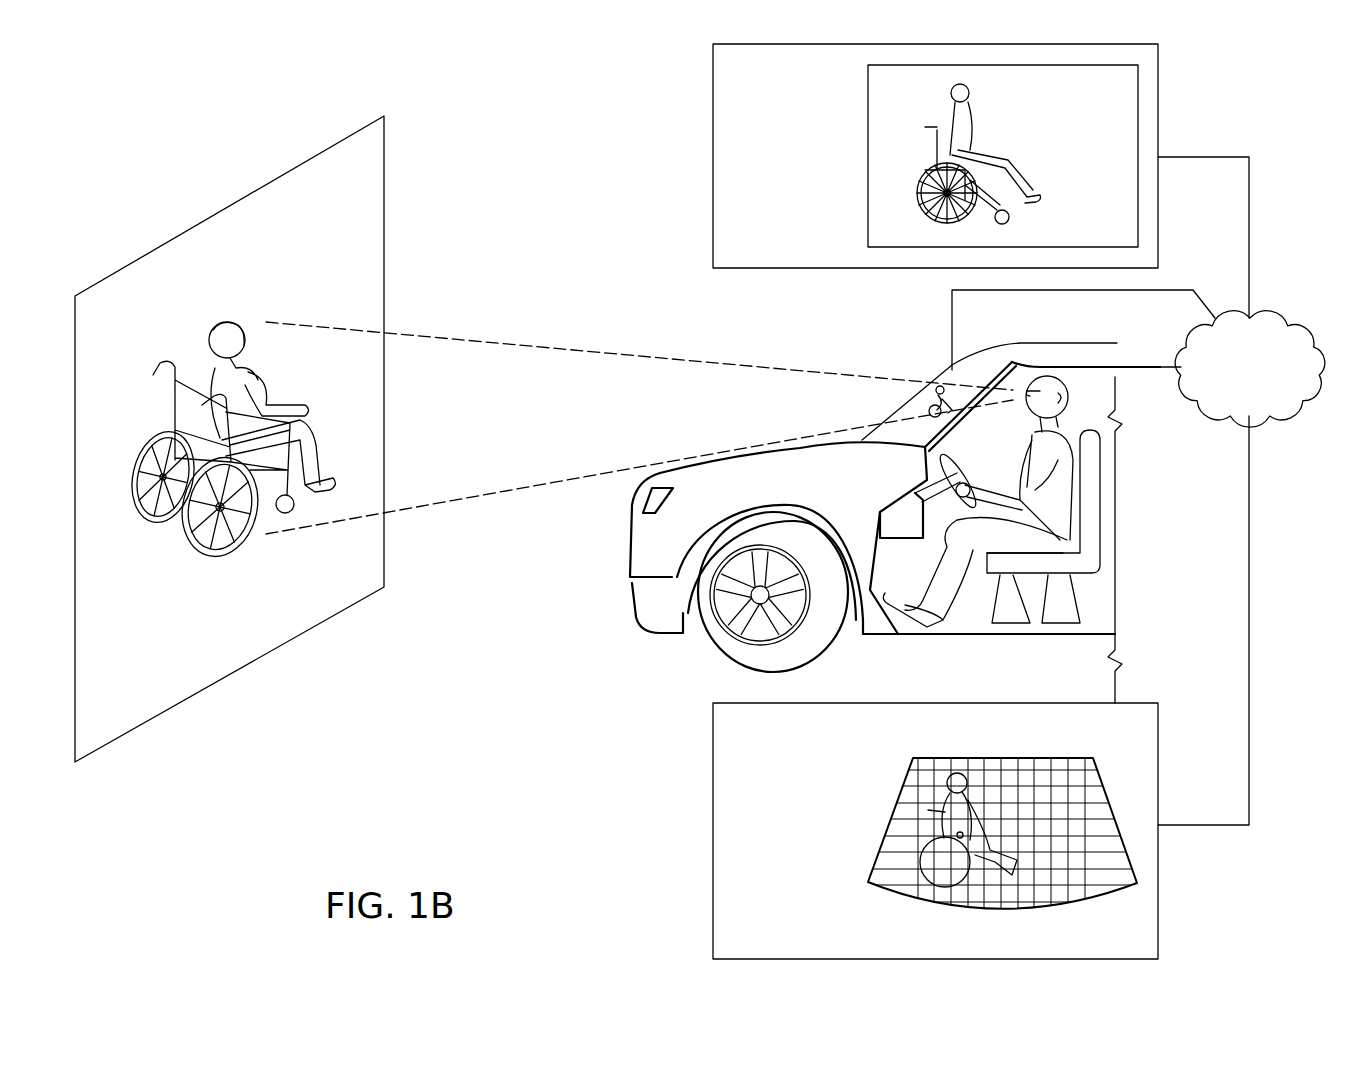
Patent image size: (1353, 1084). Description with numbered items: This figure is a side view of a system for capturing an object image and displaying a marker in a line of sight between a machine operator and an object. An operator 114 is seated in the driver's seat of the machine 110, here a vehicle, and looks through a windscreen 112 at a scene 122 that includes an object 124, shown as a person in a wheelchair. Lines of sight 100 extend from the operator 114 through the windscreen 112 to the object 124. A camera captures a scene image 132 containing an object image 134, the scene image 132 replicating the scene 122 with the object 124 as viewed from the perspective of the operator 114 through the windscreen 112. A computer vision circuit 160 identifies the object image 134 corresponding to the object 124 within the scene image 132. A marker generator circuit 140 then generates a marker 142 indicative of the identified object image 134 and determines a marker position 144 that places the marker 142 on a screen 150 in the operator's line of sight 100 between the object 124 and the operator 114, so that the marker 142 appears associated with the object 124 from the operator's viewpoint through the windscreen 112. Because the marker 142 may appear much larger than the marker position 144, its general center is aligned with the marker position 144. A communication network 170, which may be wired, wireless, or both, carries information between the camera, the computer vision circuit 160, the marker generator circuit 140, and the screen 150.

The lines of sight 100 is at (508, 343).
The machine 110 is at (628, 544).
The windscreen 112 is at (943, 375).
The operator 114 is at (1028, 450).
The scene 122 is at (200, 222).
The object 124 is at (220, 556).
The scene image 132 is at (1140, 110).
The object image 134 is at (1013, 167).
The marker generator circuit 140 is at (772, 890).
The marker 142 is at (917, 410).
The marker position 144 is at (925, 877).
The screen 150 is at (903, 402).
The computer vision circuit 160 is at (772, 214).
The communication network 170 is at (1282, 317).